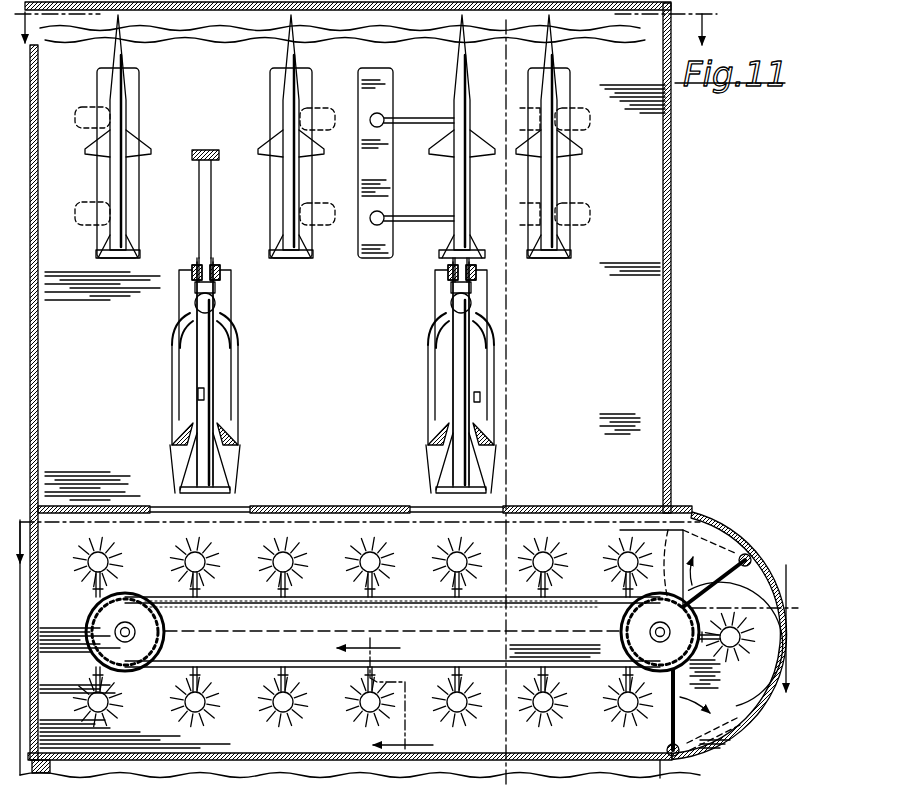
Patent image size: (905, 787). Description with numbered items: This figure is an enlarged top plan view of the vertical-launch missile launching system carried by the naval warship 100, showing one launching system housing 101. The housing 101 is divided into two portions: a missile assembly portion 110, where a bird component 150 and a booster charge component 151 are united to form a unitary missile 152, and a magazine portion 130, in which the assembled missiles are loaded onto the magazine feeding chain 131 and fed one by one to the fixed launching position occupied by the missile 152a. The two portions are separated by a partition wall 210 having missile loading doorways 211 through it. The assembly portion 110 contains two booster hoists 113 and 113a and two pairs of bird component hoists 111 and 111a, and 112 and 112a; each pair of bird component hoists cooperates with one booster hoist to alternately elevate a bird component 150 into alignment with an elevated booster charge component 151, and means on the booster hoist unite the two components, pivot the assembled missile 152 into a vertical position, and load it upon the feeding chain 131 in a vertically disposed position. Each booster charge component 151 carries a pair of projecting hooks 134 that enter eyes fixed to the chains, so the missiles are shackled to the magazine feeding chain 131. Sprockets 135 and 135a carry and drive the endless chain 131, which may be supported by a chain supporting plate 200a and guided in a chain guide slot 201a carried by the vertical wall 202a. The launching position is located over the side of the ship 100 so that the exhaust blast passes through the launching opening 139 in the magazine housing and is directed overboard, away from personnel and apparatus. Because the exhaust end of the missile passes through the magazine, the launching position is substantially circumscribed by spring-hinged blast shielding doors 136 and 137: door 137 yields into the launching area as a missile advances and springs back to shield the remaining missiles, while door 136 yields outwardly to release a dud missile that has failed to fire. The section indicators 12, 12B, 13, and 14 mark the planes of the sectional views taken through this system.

The naval warship 100 is at (650, 775).
The launching system housing 101 is at (700, 265).
The missile assembly portion 110 is at (600, 367).
The bird component hoist 111 is at (572, 173).
The bird component hoist 111a is at (383, 90).
The bird component hoist 112 is at (270, 115).
The bird component hoist 112a is at (104, 86).
The booster hoist 113 is at (443, 313).
The booster hoist 113a is at (242, 332).
The magazine portion 130 is at (652, 517).
The magazine feeding chain 131 is at (90, 628).
The projecting hook 134 is at (214, 300).
The sprocket 135 is at (140, 668).
The sprocket 135a is at (622, 628).
The blast shielding door 136 is at (688, 585).
The blast shielding door 137 is at (673, 730).
The launching opening 139 is at (778, 710).
The bird component 150 is at (128, 61).
The booster charge component 151 is at (214, 370).
The unitary missile 152 is at (300, 717).
The missile in launching position 152a is at (748, 597).
The chain supporting plate 200a is at (347, 618).
The chain guide slot 201a is at (297, 660).
The vertical wall 202a is at (455, 632).
The partition wall 210 is at (544, 506).
The missile loading doorway 211 is at (245, 506).
The section line 12 is at (530, 57).
The section line 12B is at (406, 699).
The section line 13 is at (409, 647).
The section line 14 is at (376, 22).